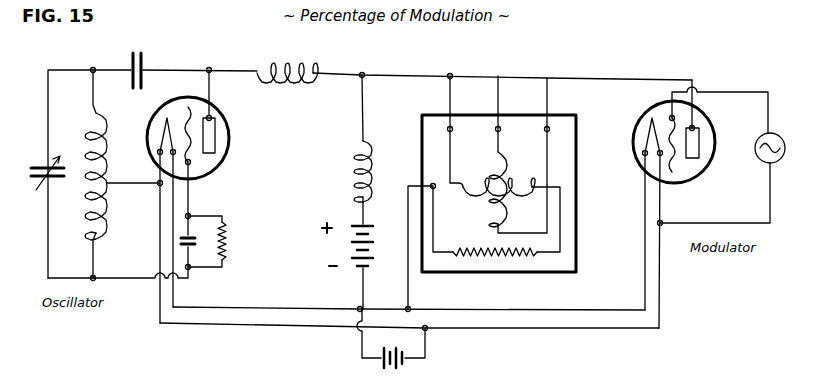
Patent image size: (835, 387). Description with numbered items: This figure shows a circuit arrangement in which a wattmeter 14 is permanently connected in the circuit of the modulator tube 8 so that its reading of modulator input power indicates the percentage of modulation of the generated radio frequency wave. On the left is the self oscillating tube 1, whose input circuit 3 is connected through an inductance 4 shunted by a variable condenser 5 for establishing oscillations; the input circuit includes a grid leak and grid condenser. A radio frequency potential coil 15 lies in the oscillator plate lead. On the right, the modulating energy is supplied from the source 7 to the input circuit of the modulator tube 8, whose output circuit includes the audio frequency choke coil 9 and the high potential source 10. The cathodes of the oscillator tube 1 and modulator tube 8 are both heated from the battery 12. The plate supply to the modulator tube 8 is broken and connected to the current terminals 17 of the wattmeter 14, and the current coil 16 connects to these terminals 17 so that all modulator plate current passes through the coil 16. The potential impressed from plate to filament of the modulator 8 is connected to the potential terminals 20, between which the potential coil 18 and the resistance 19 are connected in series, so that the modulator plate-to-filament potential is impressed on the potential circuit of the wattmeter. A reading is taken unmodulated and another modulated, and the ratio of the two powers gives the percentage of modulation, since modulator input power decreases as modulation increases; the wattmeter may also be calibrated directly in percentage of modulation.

The self oscillating tube 1 is at (212, 172).
The input circuit 3 is at (173, 267).
The inductance 4 is at (106, 224).
The variable condenser 5 is at (40, 162).
The source 7 is at (797, 144).
The modulator tube 8 is at (716, 131).
The audio frequency choke coil 9 is at (356, 146).
The high potential source 10 is at (345, 257).
The battery 12 is at (371, 363).
The wattmeter 14 is at (565, 179).
The radio frequency potential coil 15 is at (272, 66).
The current coil 16 is at (505, 174).
The current terminals 17 is at (547, 128).
The potential coil 18 is at (470, 196).
The resistance 19 is at (492, 266).
The potential terminals 20 is at (430, 172).